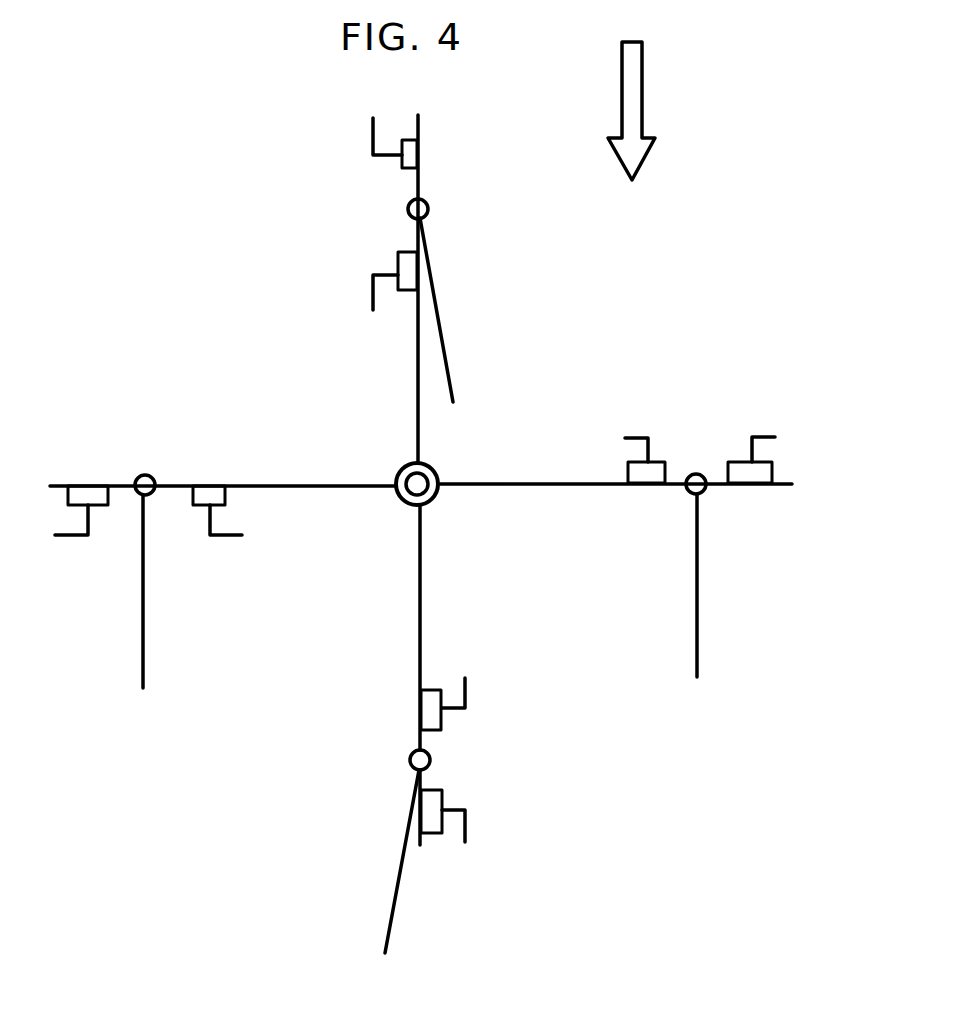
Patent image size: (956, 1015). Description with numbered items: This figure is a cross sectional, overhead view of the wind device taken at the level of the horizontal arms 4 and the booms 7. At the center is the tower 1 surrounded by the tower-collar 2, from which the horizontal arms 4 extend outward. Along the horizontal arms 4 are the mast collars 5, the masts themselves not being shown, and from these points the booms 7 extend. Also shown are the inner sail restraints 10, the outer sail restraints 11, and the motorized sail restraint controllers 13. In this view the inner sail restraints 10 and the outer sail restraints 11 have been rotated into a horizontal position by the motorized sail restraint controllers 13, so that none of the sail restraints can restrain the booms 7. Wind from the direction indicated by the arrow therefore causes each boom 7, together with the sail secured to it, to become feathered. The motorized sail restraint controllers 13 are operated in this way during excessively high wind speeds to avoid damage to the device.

The tower 1 is at (437, 490).
The tower-collar 2 is at (438, 497).
The horizontal arms 4 is at (427, 423).
The mast collars 5 is at (427, 200).
The booms 7 is at (440, 303).
The inner sail restraints 10 is at (375, 295).
The outer sail restraints 11 is at (370, 135).
The motorized sail restraint controllers 13 is at (403, 165).